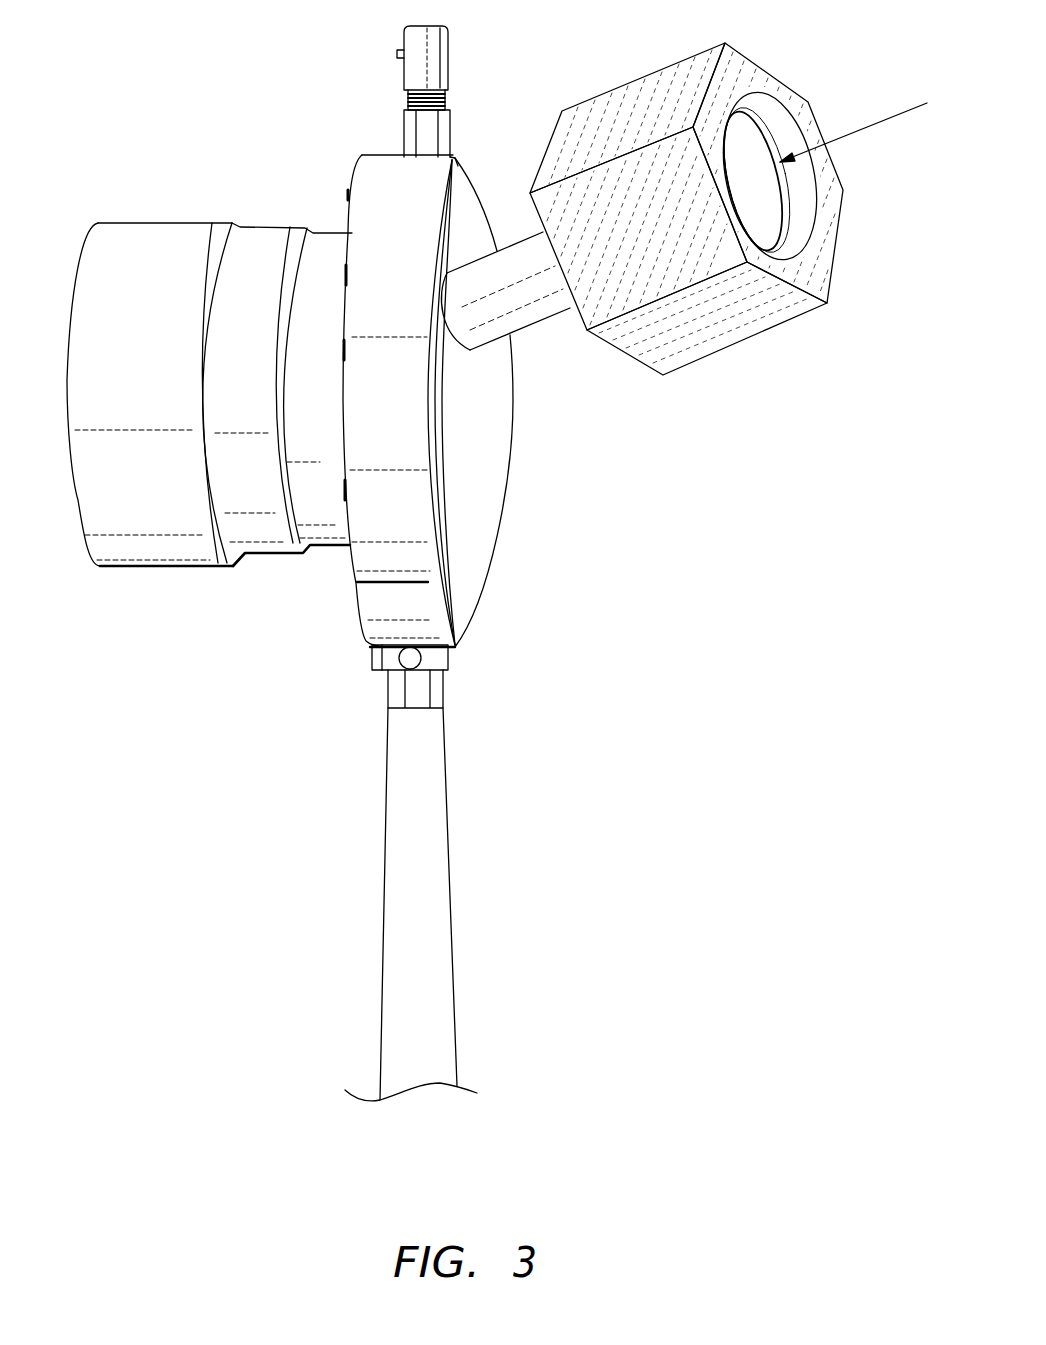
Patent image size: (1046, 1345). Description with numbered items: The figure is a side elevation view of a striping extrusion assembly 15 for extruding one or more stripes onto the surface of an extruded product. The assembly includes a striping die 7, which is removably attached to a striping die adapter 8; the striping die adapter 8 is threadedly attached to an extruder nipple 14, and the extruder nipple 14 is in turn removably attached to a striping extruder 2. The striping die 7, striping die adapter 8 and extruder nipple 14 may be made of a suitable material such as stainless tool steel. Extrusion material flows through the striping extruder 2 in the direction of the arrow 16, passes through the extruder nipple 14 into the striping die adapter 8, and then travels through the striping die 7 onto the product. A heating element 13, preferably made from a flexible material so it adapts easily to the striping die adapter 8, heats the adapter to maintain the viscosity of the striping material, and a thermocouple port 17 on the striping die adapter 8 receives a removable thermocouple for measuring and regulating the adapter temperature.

The striping extruder 2 is at (740, 66).
The striping die 7 is at (132, 222).
The striping die adapter 8 is at (482, 515).
The heating element 13 is at (352, 562).
The extruder nipple 14 is at (527, 330).
The striping extrusion assembly 15 is at (87, 600).
The arrow 16 is at (880, 125).
The thermocouple port 17 is at (450, 52).